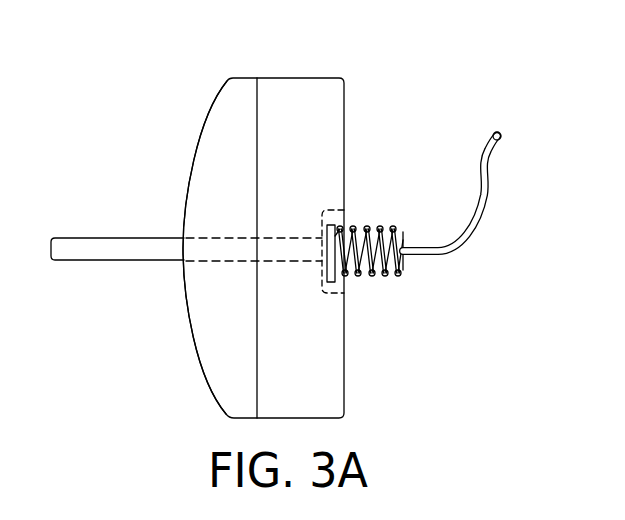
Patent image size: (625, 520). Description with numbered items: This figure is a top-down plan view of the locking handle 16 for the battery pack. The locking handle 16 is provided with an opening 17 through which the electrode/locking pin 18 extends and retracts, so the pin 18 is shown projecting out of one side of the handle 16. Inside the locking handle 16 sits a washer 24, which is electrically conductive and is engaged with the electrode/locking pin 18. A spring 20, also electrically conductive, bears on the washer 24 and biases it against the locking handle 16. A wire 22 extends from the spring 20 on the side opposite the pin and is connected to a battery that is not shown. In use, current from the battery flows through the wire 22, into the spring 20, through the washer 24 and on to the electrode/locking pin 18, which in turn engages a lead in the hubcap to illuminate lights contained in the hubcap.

The locking handle 16 is at (287, 90).
The opening 17 is at (183, 230).
The electrode/locking pin 18 is at (78, 252).
The spring 20 is at (382, 280).
The wire 22 is at (497, 195).
The washer 24 is at (332, 207).